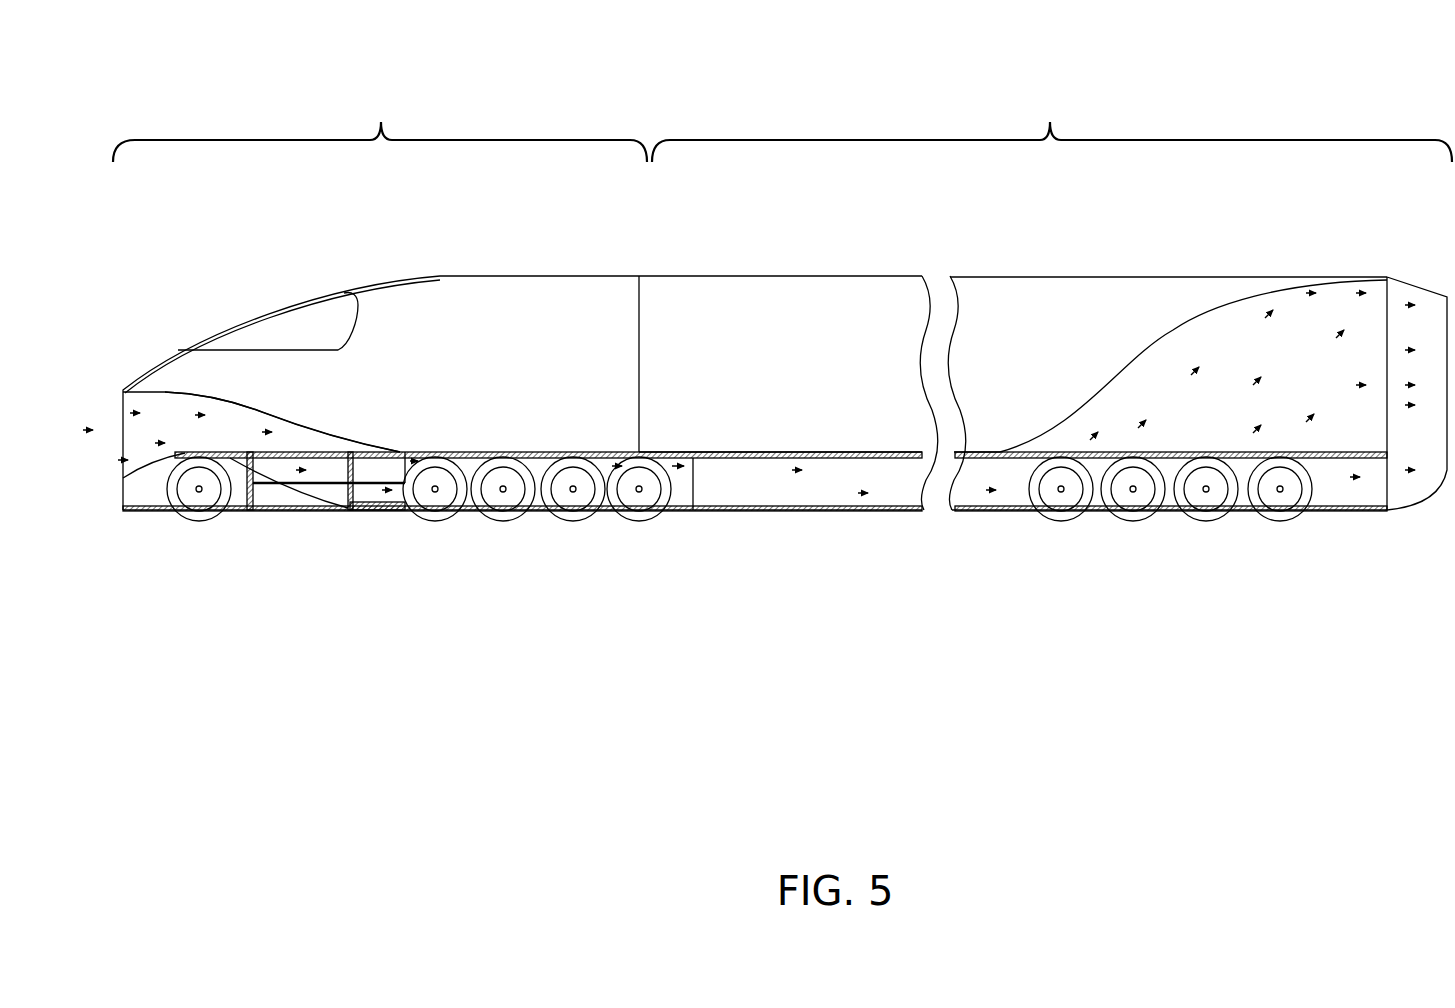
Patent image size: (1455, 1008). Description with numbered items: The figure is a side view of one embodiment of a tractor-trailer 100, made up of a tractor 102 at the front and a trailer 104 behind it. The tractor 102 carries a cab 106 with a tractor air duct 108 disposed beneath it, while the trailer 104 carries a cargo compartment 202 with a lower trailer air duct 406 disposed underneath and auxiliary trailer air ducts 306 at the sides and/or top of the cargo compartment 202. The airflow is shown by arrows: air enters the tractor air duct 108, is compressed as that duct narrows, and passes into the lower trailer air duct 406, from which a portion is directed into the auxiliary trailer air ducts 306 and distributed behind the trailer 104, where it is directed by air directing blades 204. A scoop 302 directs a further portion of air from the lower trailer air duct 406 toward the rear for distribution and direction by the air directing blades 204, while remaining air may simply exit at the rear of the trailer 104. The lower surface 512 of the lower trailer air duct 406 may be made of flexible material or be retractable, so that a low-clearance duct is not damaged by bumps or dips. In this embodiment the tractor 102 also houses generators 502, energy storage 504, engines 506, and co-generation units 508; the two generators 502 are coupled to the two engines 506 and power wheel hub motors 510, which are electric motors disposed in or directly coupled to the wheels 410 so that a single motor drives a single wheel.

The tractor-trailer 100 is at (318, 45).
The tractor 102 is at (380, 126).
The trailer 104 is at (1052, 126).
The cab 106 is at (449, 319).
The tractor air duct 108 is at (328, 438).
The cargo compartment 202 is at (733, 319).
The air directing blades 204 is at (1425, 287).
The scoop 302 is at (1400, 456).
The auxiliary trailer air ducts 306 is at (1186, 429).
The lower trailer air duct 406 is at (733, 482).
The wheels 410 is at (1137, 515).
The generators 502 is at (262, 505).
The energy storage 504 is at (318, 470).
The engines 506 is at (373, 505).
The co-generation units 508 is at (403, 466).
The wheel hub motors 510 is at (573, 505).
The lower surface 512 is at (978, 512).